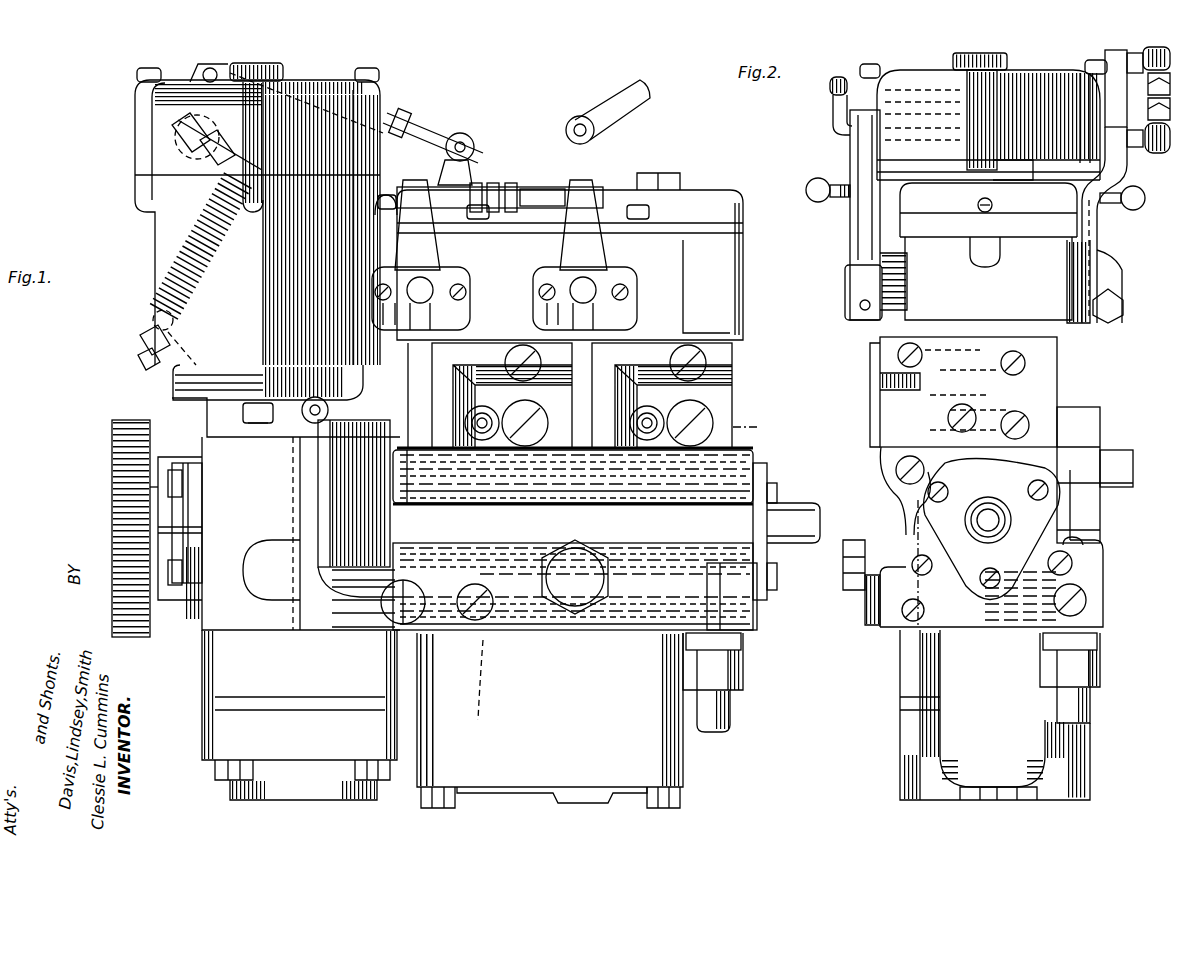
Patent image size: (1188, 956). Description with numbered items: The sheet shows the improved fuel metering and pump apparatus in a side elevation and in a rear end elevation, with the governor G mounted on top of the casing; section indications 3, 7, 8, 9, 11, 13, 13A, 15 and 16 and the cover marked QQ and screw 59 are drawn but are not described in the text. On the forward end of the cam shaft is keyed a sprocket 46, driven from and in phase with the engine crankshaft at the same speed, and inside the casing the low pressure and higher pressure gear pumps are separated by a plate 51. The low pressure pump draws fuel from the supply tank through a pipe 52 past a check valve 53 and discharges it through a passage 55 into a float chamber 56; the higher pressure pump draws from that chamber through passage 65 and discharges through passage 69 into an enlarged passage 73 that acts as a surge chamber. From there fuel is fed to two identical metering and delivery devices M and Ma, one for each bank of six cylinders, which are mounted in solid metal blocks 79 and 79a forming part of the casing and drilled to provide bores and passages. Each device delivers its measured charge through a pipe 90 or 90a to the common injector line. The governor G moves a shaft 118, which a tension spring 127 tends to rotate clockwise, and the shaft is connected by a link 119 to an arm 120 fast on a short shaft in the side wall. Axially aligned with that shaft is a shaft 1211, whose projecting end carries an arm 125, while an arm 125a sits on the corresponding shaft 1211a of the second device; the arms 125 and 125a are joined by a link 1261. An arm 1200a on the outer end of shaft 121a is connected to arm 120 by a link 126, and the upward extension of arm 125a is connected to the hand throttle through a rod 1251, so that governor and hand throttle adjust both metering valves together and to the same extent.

In FIG. 1, the governor G is at (330, 77).
In FIG. 2, the governor G is at (1043, 70).
In FIG. 1, the shaft 118 is at (188, 166).
In FIG. 1, the tension spring 127 is at (216, 268).
In FIG. 1, the sprocket 46 is at (130, 424).
In FIG. 1, the plate 51 is at (210, 706).
In FIG. 2, the plate 51 is at (900, 703).
In FIG. 1, the cam box housing QQ is at (754, 300).
In FIG. 2, the cam box housing QQ is at (1085, 325).
In FIG. 1, the arm 125 is at (428, 252).
In FIG. 1, the arm 125a is at (597, 252).
In FIG. 2, the arm 125a is at (860, 232).
In FIG. 1, the shaft 1211 is at (422, 300).
In FIG. 1, the shaft 1211a is at (585, 300).
In FIG. 2, the shaft 1211a is at (858, 306).
In FIG. 1, the arm 120 is at (478, 185).
In FIG. 2, the arm 120 is at (1108, 173).
In FIG. 1, the link 1261 is at (548, 188).
In FIG. 2, the link 1261 is at (812, 180).
In FIG. 1, the link 119 is at (433, 122).
In FIG. 2, the link 119 is at (1150, 55).
In FIG. 1, the link or rod 1251 is at (622, 110).
In FIG. 2, the link or rod 1251 is at (835, 105).
In FIG. 1, the pipe 90 is at (487, 409).
In FIG. 1, the pipe 90a is at (650, 408).
In FIG. 1, the solid metal block 79 is at (418, 442).
In FIG. 1, the solid metal block 79a is at (748, 440).
In FIG. 2, the solid metal block 79a is at (985, 340).
In FIG. 1, the passage 55 is at (525, 612).
In FIG. 2, the passage 55 is at (924, 612).
In FIG. 1, the passage 69 is at (650, 575).
In FIG. 2, the passage 69 is at (922, 575).
In FIG. 1, the enlarged passage 73 is at (598, 483).
In FIG. 2, the enlarged passage 73 is at (897, 468).
In FIG. 1, the metering and delivery device M is at (560, 446).
In FIG. 1, the metering and delivery device Ma is at (668, 446).
In FIG. 2, the metering and delivery device Ma is at (925, 390).
In FIG. 1, the float chamber 56 is at (545, 712).
In FIG. 2, the float chamber 56 is at (947, 732).
In FIG. 1, the check valve 53 is at (732, 665).
In FIG. 2, the check valve 53 is at (1092, 664).
In FIG. 1, the pipe 52 is at (725, 705).
In FIG. 2, the pipe 52 is at (1085, 698).
In FIG. 1, the section line 9- 9 is at (365, 390).
In FIG. 1, the section line 15- 15 is at (398, 369).
In FIG. 1, the section line 16- 16 is at (453, 425).
In FIG. 2, the arm 1200a is at (1108, 250).
In FIG. 2, the link 126 is at (1138, 210).
In FIG. 2, the shaft 121a is at (1125, 290).
In FIG. 2, the section line 13- 13 is at (1030, 333).
In FIG. 2, the cover plate 13A is at (1043, 521).
In FIG. 2, the passage 65 is at (1072, 568).
In FIG. 2, the cover screw 59 is at (1086, 600).
In FIG. 2, the section line 3- 3 is at (980, 47).
In FIG. 2, the section line 11- 11 is at (927, 326).
In FIG. 2, the section line 7- 7 is at (890, 577).
In FIG. 2, the section line 8- 8 is at (843, 615).